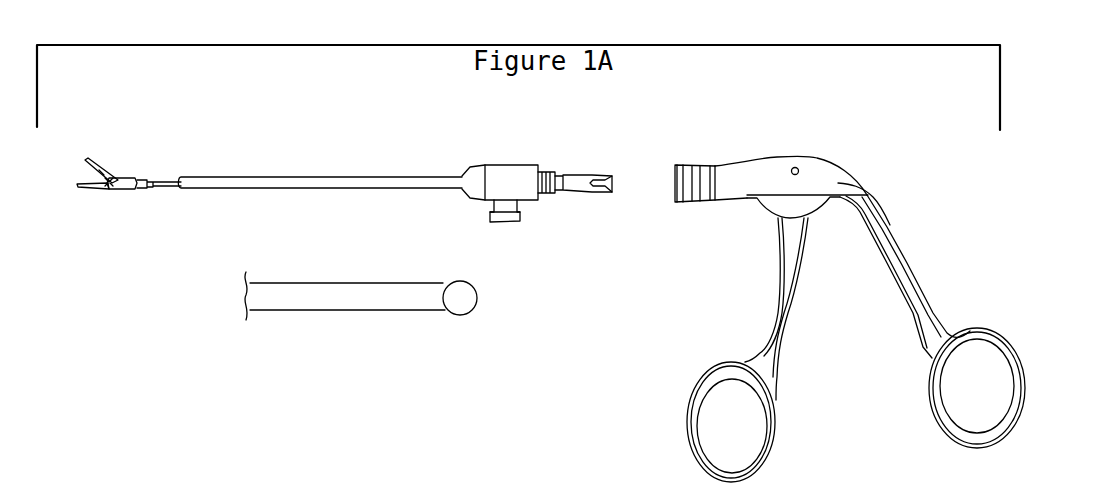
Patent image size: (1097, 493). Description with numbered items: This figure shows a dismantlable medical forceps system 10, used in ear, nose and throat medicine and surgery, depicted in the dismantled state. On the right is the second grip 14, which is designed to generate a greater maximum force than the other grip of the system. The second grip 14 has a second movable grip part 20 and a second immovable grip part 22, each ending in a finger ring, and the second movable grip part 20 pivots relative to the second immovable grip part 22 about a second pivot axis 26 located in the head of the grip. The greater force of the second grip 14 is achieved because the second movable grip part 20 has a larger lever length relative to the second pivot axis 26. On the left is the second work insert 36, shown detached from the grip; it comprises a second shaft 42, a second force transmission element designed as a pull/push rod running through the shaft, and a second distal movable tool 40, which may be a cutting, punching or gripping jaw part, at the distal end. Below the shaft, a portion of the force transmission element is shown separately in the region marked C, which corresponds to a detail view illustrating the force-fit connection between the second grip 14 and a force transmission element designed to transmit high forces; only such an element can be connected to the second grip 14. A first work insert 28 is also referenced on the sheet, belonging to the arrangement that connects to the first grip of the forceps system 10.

The dismantlable medical forceps system 10 is at (867, 290).
The second grip 14 is at (913, 192).
The second movable grip part 20 is at (788, 282).
The second immovable grip part 22 is at (985, 217).
The second pivot axis 26 is at (798, 168).
The first work insert 28 is at (152, 482).
The second work insert 36 is at (344, 157).
The second distal movable tool 40 is at (103, 162).
The second shaft 42 is at (305, 183).
The detail C is at (187, 306).